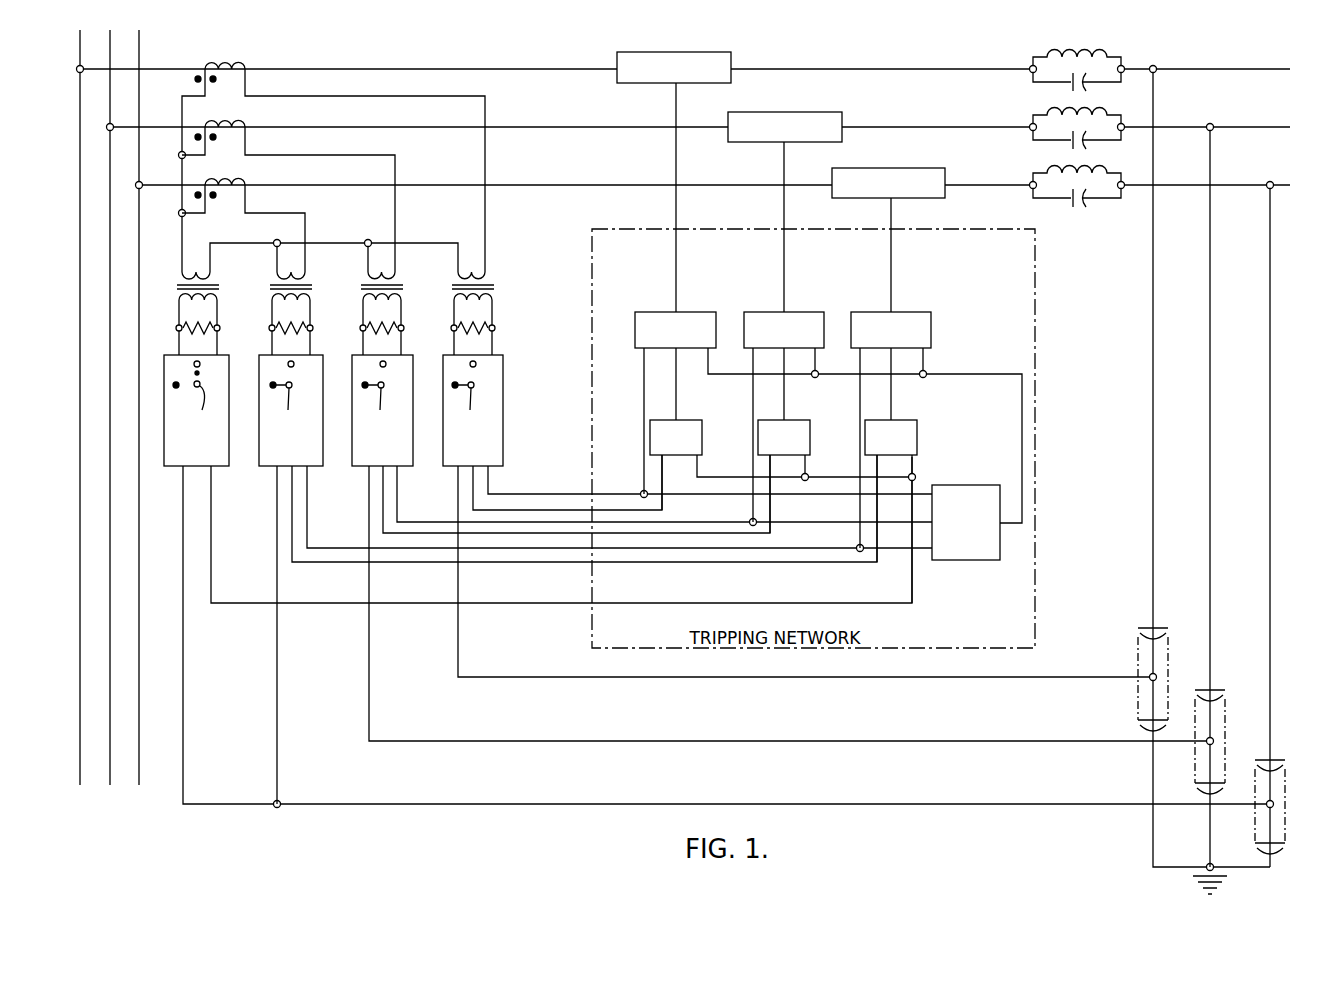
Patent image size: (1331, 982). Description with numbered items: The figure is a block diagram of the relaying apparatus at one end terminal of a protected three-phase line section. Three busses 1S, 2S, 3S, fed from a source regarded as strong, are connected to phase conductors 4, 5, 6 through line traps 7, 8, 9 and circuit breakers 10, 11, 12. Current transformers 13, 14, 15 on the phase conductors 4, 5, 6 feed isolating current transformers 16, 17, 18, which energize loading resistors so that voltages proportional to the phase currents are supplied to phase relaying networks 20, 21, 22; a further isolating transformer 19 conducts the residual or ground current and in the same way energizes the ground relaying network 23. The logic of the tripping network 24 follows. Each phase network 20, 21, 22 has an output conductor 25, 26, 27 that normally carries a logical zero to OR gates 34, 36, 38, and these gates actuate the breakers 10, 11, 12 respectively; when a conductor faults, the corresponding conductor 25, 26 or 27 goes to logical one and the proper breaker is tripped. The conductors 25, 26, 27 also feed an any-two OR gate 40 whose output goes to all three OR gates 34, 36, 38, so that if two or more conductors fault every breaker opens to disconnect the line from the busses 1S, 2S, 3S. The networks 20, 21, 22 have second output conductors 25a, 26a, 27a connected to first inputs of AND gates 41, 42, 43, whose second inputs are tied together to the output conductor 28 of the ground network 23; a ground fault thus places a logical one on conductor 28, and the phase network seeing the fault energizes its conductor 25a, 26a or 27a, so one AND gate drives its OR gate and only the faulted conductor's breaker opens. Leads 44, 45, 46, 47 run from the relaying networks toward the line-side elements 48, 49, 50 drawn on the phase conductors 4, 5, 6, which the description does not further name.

The bus 1S is at (80, 200).
The bus 2S is at (110, 243).
The bus 3S is at (139, 278).
The phase conductor 4 is at (1211, 69).
The phase conductor 5 is at (1242, 127).
The phase conductor 6 is at (1242, 184).
The line trap 7 is at (1048, 78).
The line trap 8 is at (1048, 138).
The line trap 9 is at (1045, 195).
The circuit breaker 10 is at (731, 58).
The circuit breaker 11 is at (840, 118).
The circuit breaker 12 is at (945, 174).
The current transformer 13 is at (247, 65).
The current transformer 14 is at (247, 123).
The current transformer 15 is at (244, 182).
The isolating current transformer 16 is at (490, 295).
The isolating current transformer 17 is at (397, 295).
The isolating current transformer 18 is at (305, 295).
The isolating transformer 19 is at (215, 295).
The phase relaying network 20 is at (504, 372).
The phase relaying network 21 is at (414, 372).
The phase relaying network 22 is at (324, 372).
The ground relaying network 23 is at (230, 372).
The tripping network 24 is at (1036, 246).
The output conductor 25 is at (490, 486).
The output conductor 25a is at (473, 500).
The output conductor 26 is at (400, 486).
The output conductor 26a is at (383, 515).
The output conductor 27 is at (307, 501).
The output conductor 27a is at (292, 526).
The output conductor 28 is at (211, 501).
The OR gate 34 is at (700, 312).
The OR gate 36 is at (808, 312).
The OR gate 38 is at (916, 312).
The ANY "2" OR gate 40 is at (975, 485).
The AND gate 41 is at (700, 420).
The AND gate 42 is at (808, 420).
The AND gate 43 is at (915, 420).
The lead 44 is at (460, 640).
The lead 45 is at (370, 700).
The lead 46 is at (280, 712).
The lead 47 is at (185, 690).
The surge arrester 48 is at (1138, 651).
The surge arrester 49 is at (1214, 712).
The surge arrester 50 is at (1274, 782).